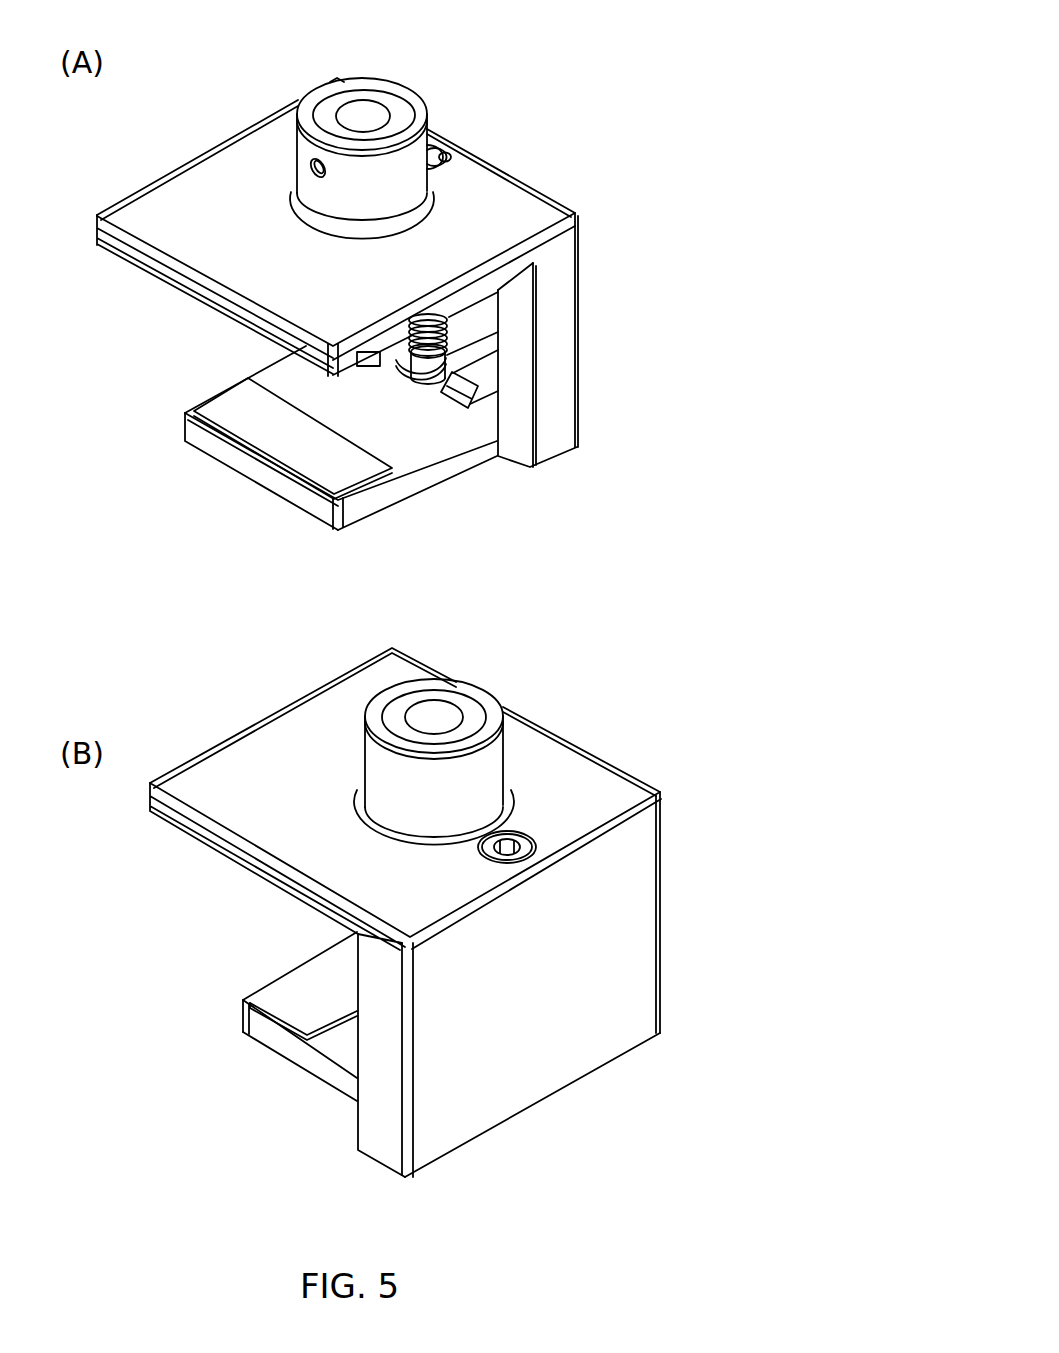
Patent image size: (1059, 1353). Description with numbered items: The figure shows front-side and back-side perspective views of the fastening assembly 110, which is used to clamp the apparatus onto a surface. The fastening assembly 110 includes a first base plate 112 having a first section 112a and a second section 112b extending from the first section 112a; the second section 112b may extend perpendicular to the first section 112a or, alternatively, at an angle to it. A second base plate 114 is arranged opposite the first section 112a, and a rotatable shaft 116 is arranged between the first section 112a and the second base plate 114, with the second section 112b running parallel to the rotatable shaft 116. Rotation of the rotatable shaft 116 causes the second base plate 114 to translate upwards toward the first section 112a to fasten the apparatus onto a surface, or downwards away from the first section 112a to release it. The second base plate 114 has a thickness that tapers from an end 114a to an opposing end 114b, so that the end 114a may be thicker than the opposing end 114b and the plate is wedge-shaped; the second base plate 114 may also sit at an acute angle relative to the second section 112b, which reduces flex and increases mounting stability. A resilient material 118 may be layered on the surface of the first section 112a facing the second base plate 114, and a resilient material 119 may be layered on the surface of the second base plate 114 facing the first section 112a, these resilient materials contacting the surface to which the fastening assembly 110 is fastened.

The fastening assembly 110 is at (645, 82).
The first base plate 112 is at (253, 126).
The first section 112a is at (368, 514).
The second section 112b is at (566, 347).
The second base plate 114 is at (393, 442).
The end 114a is at (247, 470).
The opposing end 114b is at (468, 450).
The rotatable shaft 116 is at (430, 316).
The resilient material 118 is at (163, 284).
The resilient material 119 is at (293, 709).